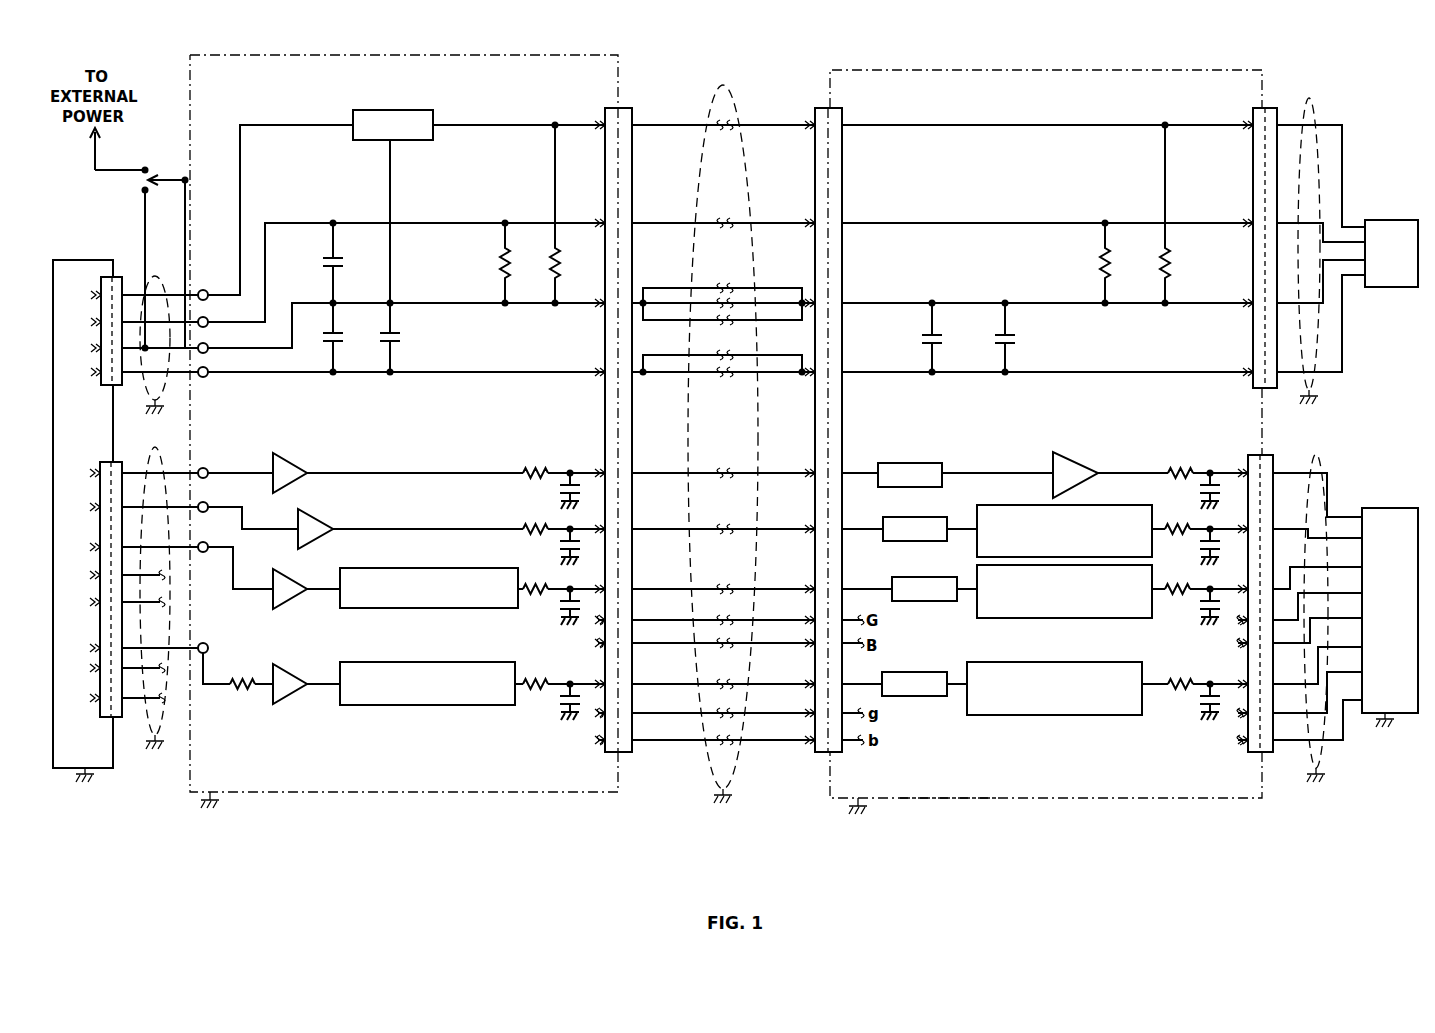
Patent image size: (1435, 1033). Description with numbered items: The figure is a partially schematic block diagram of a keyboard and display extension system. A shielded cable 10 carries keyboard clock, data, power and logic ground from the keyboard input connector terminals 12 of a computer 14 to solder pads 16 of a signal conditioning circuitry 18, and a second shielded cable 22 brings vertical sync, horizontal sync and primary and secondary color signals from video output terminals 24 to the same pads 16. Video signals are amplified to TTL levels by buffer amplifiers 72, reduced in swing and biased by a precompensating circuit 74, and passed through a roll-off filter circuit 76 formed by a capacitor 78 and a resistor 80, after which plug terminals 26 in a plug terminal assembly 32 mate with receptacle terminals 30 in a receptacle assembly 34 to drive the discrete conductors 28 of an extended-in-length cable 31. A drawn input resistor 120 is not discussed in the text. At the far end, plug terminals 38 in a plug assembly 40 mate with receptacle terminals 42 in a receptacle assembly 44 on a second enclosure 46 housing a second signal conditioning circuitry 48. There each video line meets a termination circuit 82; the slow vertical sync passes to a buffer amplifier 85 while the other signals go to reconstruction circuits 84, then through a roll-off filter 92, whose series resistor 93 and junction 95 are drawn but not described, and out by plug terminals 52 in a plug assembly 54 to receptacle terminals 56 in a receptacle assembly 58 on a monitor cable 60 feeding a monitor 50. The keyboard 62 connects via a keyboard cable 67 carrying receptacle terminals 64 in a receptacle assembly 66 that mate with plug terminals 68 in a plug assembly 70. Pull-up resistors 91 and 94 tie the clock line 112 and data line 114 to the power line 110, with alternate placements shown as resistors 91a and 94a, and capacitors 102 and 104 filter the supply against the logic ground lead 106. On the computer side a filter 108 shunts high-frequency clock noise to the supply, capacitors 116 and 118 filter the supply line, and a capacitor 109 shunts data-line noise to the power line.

The shielded cable 10 is at (165, 272).
The keyboard input connector terminals 12 is at (113, 277).
The computer 14 is at (100, 260).
The solder connections or pads 16 is at (206, 292).
The signal conditioning circuitry 18 is at (416, 437).
The shielded cable 22 is at (174, 450).
The video output terminals 24 is at (105, 718).
The plug terminals 26 is at (603, 120).
The discrete conductors 28 is at (685, 119).
The receptacle terminals 30 is at (624, 108).
The extended-in-length cable 31 is at (729, 77).
The plug terminal assembly 32 is at (612, 104).
The receptacle assembly 34 is at (632, 119).
The plug terminals 38 is at (813, 122).
The plug assembly 40 is at (820, 108).
The receptacle terminals 42 is at (832, 108).
The receptacle assembly 44 is at (843, 120).
The second enclosure 46 is at (885, 68).
The second signal conditioning circuitry 48 is at (1051, 435).
The monitor 50 is at (1391, 505).
The plug terminals 52 is at (1251, 460).
The plug assembly 54 is at (1260, 455).
The receptacle terminals 56 is at (1274, 462).
The receptacle assembly 58 is at (1316, 462).
The monitor cable 60 is at (1346, 475).
The keyboard 62 is at (1392, 220).
The receptacle terminals 64 is at (1269, 108).
The receptacle assembly 66 is at (1278, 116).
The keyboard cable 67 is at (1346, 121).
The plug terminals 68 is at (1258, 106).
The plug assembly 70 is at (1253, 140).
The TTL buffer amplifiers 72 is at (303, 472).
The precompensating circuit 74 is at (449, 568).
The roll-off filter circuit 76 is at (547, 507).
The capacitor 78 is at (574, 481).
The resistor 80 is at (549, 467).
The termination circuit 82 is at (920, 463).
The reconstruction circuits 84 is at (1065, 618).
The buffer amplifier 85 is at (1077, 460).
The pull-up resistor 91 is at (1172, 268).
The pull-up resistor 91a is at (505, 268).
The roll-off filter 92 is at (1193, 503).
The series resistor 93 is at (1180, 468).
The pull-up resistor 94 is at (1104, 270).
The pull-up resistor 94a is at (558, 268).
The junction node 95 is at (1216, 484).
The capacitor 102 is at (927, 334).
The capacitor 104 is at (1016, 334).
The logic ground lead 106 is at (516, 372).
The filter 108 is at (418, 109).
The capacitor 109 is at (342, 262).
The power line 110 is at (446, 303).
The clock line 112 is at (495, 124).
The data line 114 is at (458, 223).
The capacitor 116 is at (323, 339).
The capacitor 118 is at (392, 342).
The resistor 120 is at (240, 688).